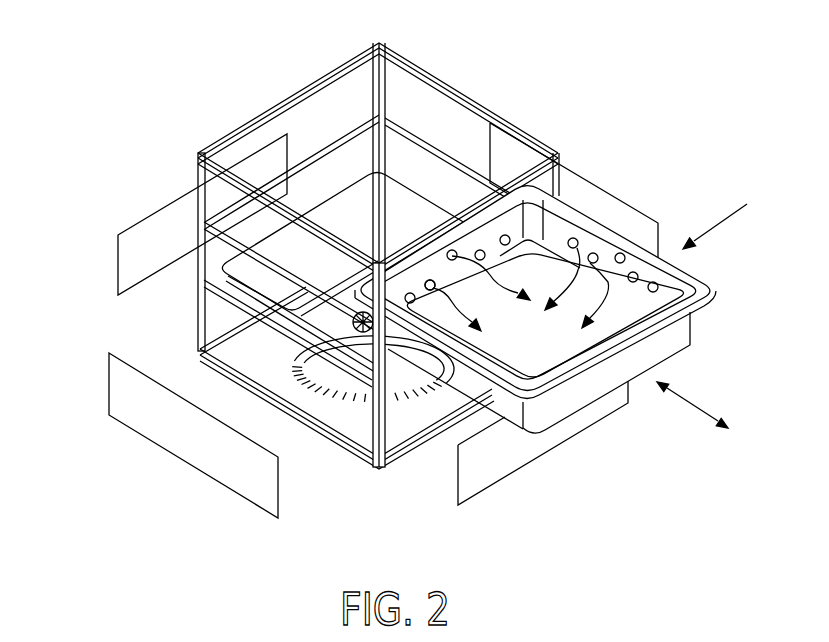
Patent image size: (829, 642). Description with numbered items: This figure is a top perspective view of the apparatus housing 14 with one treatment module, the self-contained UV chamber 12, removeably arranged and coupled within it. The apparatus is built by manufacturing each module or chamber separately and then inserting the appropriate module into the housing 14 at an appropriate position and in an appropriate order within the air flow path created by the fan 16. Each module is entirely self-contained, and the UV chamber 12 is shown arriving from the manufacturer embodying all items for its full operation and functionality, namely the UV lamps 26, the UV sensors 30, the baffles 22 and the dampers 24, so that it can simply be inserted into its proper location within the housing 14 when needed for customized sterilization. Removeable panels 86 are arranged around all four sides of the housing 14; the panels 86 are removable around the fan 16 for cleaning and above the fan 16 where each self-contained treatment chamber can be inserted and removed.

The UV chamber 12 is at (704, 299).
The housing 14 is at (447, 88).
The fan 16 is at (357, 402).
The baffles 22 is at (574, 236).
The dampers 24 is at (597, 256).
The UV lamps 26 is at (434, 291).
The UV sensors 30 is at (463, 259).
The removeable panels 86 is at (118, 266).